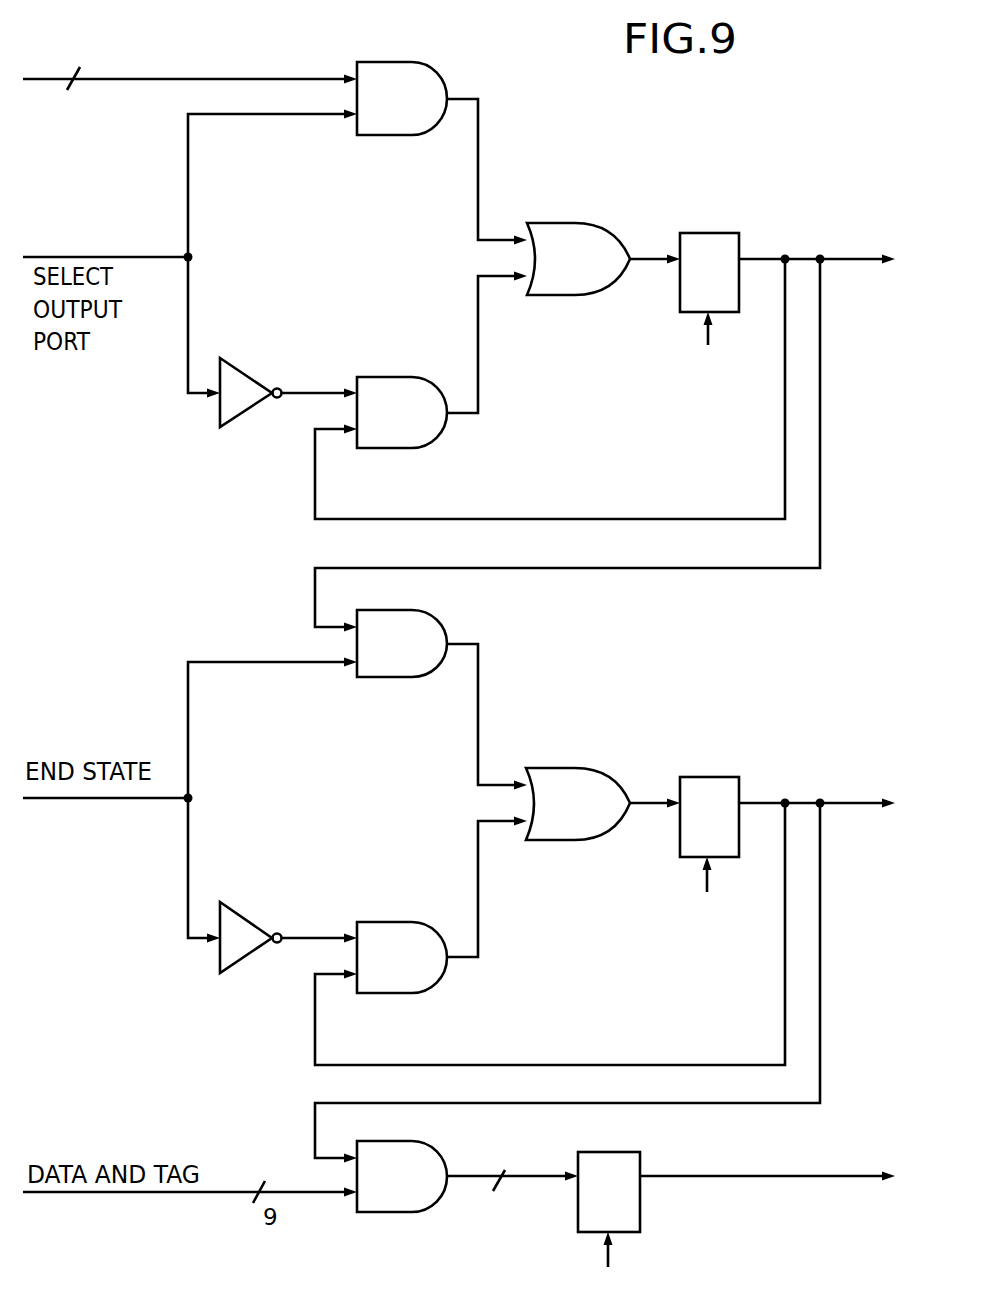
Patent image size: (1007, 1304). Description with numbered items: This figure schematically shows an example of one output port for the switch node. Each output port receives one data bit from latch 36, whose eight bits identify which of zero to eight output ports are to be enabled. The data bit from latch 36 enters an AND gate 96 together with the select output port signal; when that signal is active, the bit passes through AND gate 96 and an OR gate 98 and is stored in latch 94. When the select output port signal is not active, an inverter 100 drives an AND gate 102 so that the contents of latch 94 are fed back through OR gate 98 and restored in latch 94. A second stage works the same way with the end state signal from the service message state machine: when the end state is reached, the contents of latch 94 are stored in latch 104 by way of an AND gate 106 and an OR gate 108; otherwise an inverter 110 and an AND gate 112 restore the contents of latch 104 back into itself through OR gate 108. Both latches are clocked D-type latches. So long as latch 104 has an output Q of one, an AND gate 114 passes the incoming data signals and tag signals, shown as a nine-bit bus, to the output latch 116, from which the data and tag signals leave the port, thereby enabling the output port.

The latch 36 is at (190, 58).
The latch 94 is at (713, 233).
The AND gate 96 is at (390, 135).
The OR gate 98 is at (568, 222).
The inverter 100 is at (247, 372).
The AND gate 102 is at (387, 378).
The latch 104 is at (715, 777).
The AND gate 106 is at (387, 677).
The OR gate 108 is at (570, 768).
The inverter 110 is at (247, 918).
The AND gate 112 is at (386, 922).
The AND gate 114 is at (400, 1212).
The output latch 116 is at (642, 1212).